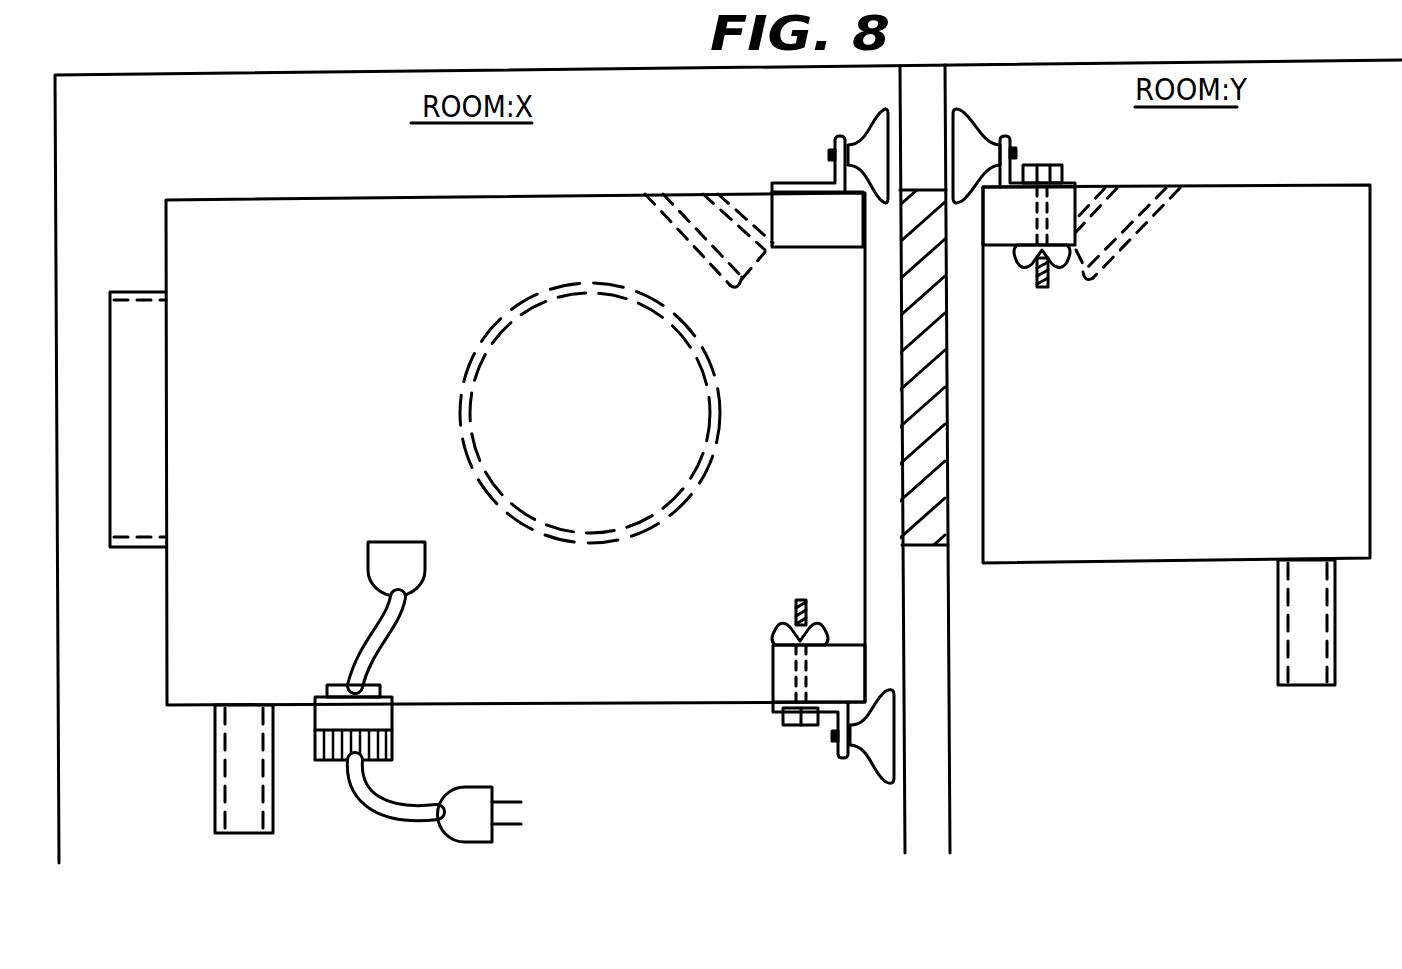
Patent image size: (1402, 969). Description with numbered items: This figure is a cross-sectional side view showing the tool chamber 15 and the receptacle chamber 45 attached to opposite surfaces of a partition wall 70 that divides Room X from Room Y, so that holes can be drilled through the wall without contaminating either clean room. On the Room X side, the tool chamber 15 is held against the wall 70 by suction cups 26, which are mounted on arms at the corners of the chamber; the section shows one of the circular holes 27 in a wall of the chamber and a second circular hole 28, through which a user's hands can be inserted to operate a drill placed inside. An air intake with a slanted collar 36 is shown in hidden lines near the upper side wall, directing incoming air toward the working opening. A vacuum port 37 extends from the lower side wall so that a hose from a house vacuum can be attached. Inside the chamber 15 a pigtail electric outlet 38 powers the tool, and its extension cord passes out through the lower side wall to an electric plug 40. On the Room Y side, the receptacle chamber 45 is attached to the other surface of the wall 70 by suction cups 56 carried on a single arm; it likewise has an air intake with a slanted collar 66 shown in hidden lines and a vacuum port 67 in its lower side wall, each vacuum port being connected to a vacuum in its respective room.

The tool chamber 15 is at (222, 173).
The suction cups 26 is at (873, 127).
The circular hole 27 is at (166, 392).
The circular hole 28 is at (652, 383).
The slanted collar 36 is at (688, 240).
The vacuum port 37 is at (215, 797).
The pigtail electric outlet 38 is at (425, 560).
The electric plug 40 is at (478, 790).
The receptacle chamber 45 is at (1248, 158).
The suction cups 56 is at (975, 125).
The slanted collar 66 is at (1138, 236).
The vacuum port 67 is at (1278, 665).
The partition wall 70 is at (917, 82).